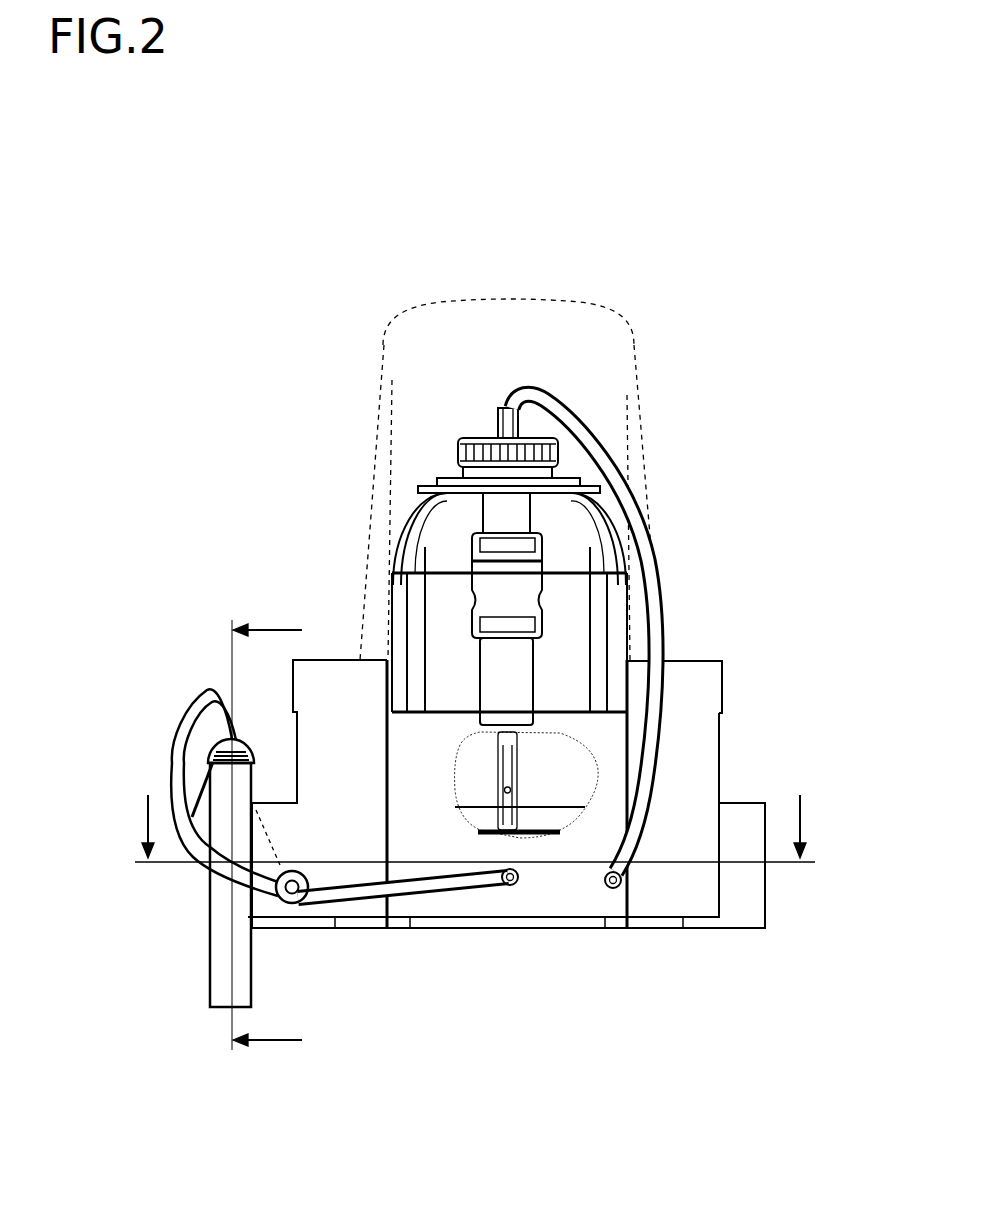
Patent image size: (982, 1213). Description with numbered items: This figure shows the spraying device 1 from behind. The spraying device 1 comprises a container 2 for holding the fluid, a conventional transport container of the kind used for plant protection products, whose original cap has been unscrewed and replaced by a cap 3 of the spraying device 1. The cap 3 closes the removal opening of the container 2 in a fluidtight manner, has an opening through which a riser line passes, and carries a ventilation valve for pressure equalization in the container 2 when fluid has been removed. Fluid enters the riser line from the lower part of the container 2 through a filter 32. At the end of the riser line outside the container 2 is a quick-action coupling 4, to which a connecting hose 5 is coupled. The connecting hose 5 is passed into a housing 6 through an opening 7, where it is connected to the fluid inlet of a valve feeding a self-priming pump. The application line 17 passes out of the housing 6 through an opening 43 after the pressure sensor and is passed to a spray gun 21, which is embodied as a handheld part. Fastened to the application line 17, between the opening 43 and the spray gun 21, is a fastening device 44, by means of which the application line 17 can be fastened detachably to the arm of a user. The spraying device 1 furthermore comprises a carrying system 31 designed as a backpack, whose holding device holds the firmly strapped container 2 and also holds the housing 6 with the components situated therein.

The spraying device 1 is at (644, 284).
The container 2 is at (637, 531).
The cap 3 is at (472, 435).
The quick-action coupling 4 is at (498, 436).
The connecting hose 5 is at (650, 720).
The housing 6 is at (698, 685).
The opening 7 is at (612, 892).
The application line 17 is at (340, 892).
The spray gun 21 is at (196, 942).
The carrying system 31 is at (575, 362).
The filter 32 is at (518, 780).
The opening 43 is at (513, 886).
The fastening device 44 is at (322, 852).